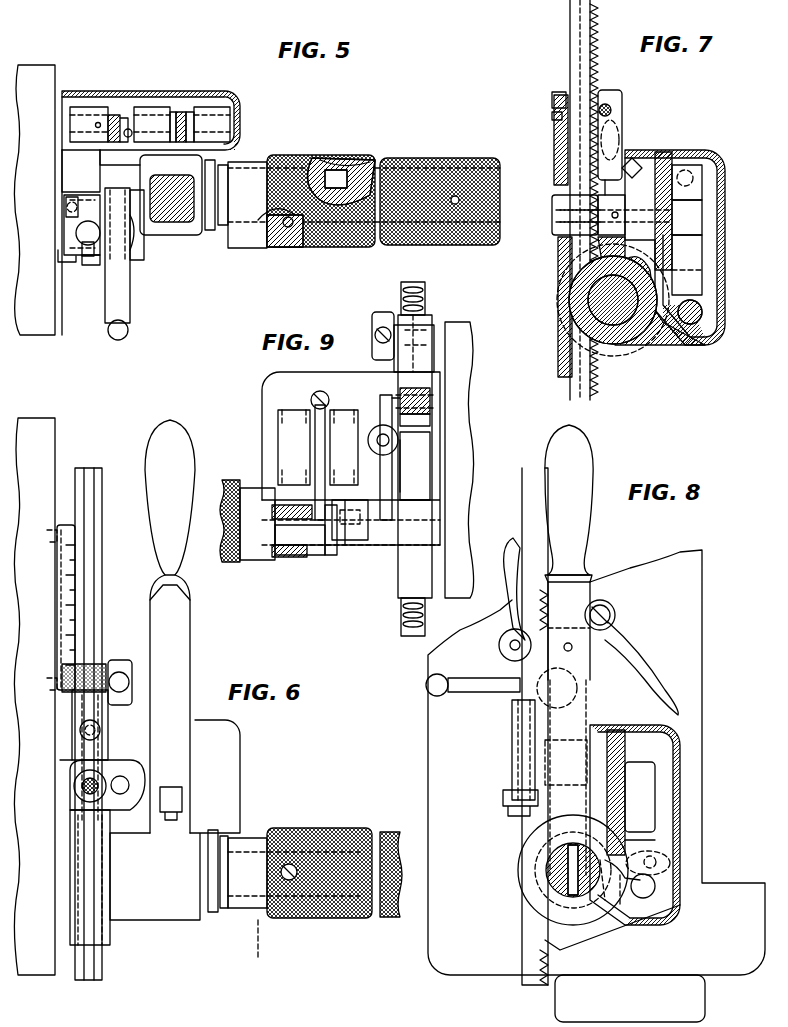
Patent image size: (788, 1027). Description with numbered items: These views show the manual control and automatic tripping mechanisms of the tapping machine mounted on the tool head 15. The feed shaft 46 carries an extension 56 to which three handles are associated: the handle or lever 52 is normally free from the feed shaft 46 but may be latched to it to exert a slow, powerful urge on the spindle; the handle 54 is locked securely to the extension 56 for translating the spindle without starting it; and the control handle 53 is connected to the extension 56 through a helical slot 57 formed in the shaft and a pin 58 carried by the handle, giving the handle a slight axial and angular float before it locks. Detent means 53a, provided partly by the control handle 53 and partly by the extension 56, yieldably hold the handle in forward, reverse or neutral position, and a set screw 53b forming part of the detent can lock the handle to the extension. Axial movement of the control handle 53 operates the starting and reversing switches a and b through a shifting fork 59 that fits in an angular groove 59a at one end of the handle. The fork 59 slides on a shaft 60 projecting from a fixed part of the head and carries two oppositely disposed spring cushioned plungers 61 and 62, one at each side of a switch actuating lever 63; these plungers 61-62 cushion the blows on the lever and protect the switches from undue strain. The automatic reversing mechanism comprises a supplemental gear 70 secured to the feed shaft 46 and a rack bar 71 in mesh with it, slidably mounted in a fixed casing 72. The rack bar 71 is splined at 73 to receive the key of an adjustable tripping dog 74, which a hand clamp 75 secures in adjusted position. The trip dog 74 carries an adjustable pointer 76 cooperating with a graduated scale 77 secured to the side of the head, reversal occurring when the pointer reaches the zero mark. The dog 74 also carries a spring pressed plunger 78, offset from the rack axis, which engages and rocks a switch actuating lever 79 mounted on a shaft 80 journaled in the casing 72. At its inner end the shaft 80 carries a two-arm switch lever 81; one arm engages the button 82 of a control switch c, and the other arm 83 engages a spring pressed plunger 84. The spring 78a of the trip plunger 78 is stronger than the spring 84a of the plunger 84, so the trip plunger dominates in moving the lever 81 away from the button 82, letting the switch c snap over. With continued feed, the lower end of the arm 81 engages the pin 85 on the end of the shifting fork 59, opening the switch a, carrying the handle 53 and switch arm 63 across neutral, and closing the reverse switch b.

In FIG. 5, the tool head 15 is at (34, 200).
In FIG. 9, the tool head 15 is at (470, 352).
In FIG. 6, the tool head 15 is at (34, 696).
In FIG. 8, the tool head 15 is at (596, 786).
In FIG. 7, the feed shaft 46 is at (640, 335).
In FIG. 8, the feed shaft 46 is at (547, 872).
In FIG. 5, the handle or lever 52 is at (175, 222).
In FIG. 6, the handle or lever 52 is at (157, 444).
In FIG. 8, the handle or lever 52 is at (578, 530).
In FIG. 5, the control handle 53 is at (298, 158).
In FIG. 9, the control handle 53 is at (246, 488).
In FIG. 6, the control handle 53 is at (332, 828).
In FIG. 8, the control handle 53 is at (560, 905).
In FIG. 5, the detent means 53a is at (272, 220).
In FIG. 5, the set screw 53b is at (288, 228).
In FIG. 6, the set screw 53b is at (292, 882).
In FIG. 5, the handle 54 is at (410, 160).
In FIG. 6, the handle 54 is at (390, 832).
In FIG. 5, the feed shaft extension 56 is at (448, 160).
In FIG. 9, the feed shaft extension 56 is at (351, 532).
In FIG. 6, the feed shaft extension 56 is at (294, 905).
In FIG. 8, the feed shaft extension 56 is at (545, 895).
In FIG. 5, the helical slot 57 is at (355, 162).
In FIG. 5, the pin 58 is at (338, 170).
In FIG. 5, the shifting fork 59 is at (215, 165).
In FIG. 9, the shifting fork 59 is at (330, 560).
In FIG. 6, the shifting fork 59 is at (216, 836).
In FIG. 8, the shifting fork 59 is at (620, 908).
In FIG. 5, the angular groove 59a is at (223, 228).
In FIG. 6, the angular groove 59a is at (224, 910).
In FIG. 8, the angular groove 59a is at (578, 912).
In FIG. 5, the shaft 60 is at (115, 112).
In FIG. 7, the shaft 60 is at (702, 313).
In FIG. 9, the shaft 60 is at (312, 560).
In FIG. 8, the shaft 60 is at (648, 898).
In FIG. 5, the spring cushioned plunger 61 is at (192, 110).
In FIG. 9, the spring cushioned plunger 61 is at (282, 555).
In FIG. 5, the spring cushioned plunger 62 is at (172, 110).
In FIG. 9, the spring cushioned plunger 62 is at (340, 555).
In FIG. 8, the spring cushioned plungers 61-62 is at (672, 862).
In FIG. 5, the switch actuating lever 63 is at (182, 110).
In FIG. 9, the switch actuating lever 63 is at (325, 494).
In FIG. 8, the switch actuating lever 63 is at (652, 836).
In FIG. 7, the supplemental gear 70 is at (605, 325).
In FIG. 5, the rack bar 71 is at (104, 262).
In FIG. 7, the rack bar 71 is at (580, 42).
In FIG. 9, the rack bar 71 is at (425, 298).
In FIG. 6, the rack bar 71 is at (102, 496).
In FIG. 8, the rack bar 71 is at (530, 515).
In FIG. 5, the fixed casing 72 is at (70, 165).
In FIG. 7, the fixed casing 72 is at (558, 268).
In FIG. 9, the fixed casing 72 is at (272, 392).
In FIG. 6, the fixed casing 72 is at (105, 935).
In FIG. 8, the fixed casing 72 is at (518, 886).
In FIG. 7, the spline 73 is at (580, 12).
In FIG. 6, the spline 73 is at (94, 545).
In FIG. 5, the tripping dog 74 is at (72, 226).
In FIG. 7, the tripping dog 74 is at (556, 134).
In FIG. 9, the tripping dog 74 is at (398, 362).
In FIG. 6, the tripping dog 74 is at (85, 710).
In FIG. 8, the tripping dog 74 is at (532, 745).
In FIG. 5, the hand clamp 75 is at (130, 318).
In FIG. 9, the hand clamp 75 is at (374, 320).
In FIG. 6, the hand clamp 75 is at (132, 668).
In FIG. 8, the hand clamp 75 is at (475, 695).
In FIG. 5, the pointer 76 is at (72, 262).
In FIG. 7, the pointer 76 is at (552, 100).
In FIG. 6, the pointer 76 is at (80, 674).
In FIG. 5, the graduated scale 77 is at (60, 260).
In FIG. 6, the graduated scale 77 is at (65, 596).
In FIG. 5, the spring pressed plunger 78 is at (66, 198).
In FIG. 7, the spring pressed plunger 78 is at (585, 186).
In FIG. 6, the spring pressed plunger 78 is at (72, 762).
In FIG. 8, the spring pressed plunger 78 is at (602, 748).
In FIG. 7, the spring 78a is at (620, 130).
In FIG. 5, the switch actuating lever 79 is at (142, 240).
In FIG. 7, the switch actuating lever 79 is at (620, 196).
In FIG. 6, the switch actuating lever 79 is at (72, 786).
In FIG. 8, the switch actuating lever 79 is at (548, 818).
In FIG. 7, the shaft 80 is at (704, 212).
In FIG. 9, the shaft 80 is at (380, 432).
In FIG. 6, the shaft 80 is at (120, 776).
In FIG. 5, the two-arm switch lever 81 is at (108, 105).
In FIG. 7, the two-arm switch lever 81 is at (685, 238).
In FIG. 9, the two-arm switch lever 81 is at (384, 470).
In FIG. 9, the button 82 is at (400, 490).
In FIG. 7, the arm 83 is at (702, 190).
In FIG. 9, the arm 83 is at (395, 398).
In FIG. 7, the spring pressed plunger 84 is at (694, 176).
In FIG. 9, the spring pressed plunger 84 is at (412, 388).
In FIG. 9, the spring 84a is at (420, 420).
In FIG. 5, the pin 85 is at (128, 115).
In FIG. 9, the pin 85 is at (376, 550).
In FIG. 8, the pin 85 is at (670, 848).
In FIG. 5, the starting and reversing switch a is at (148, 107).
In FIG. 9, the starting and reversing switch a is at (344, 447).
In FIG. 5, the reverse switch b is at (215, 107).
In FIG. 9, the reverse switch b is at (294, 447).
In FIG. 8, the reverse switch b is at (640, 800).
In FIG. 7, the control switch c is at (705, 284).
In FIG. 9, the control switch c is at (418, 462).